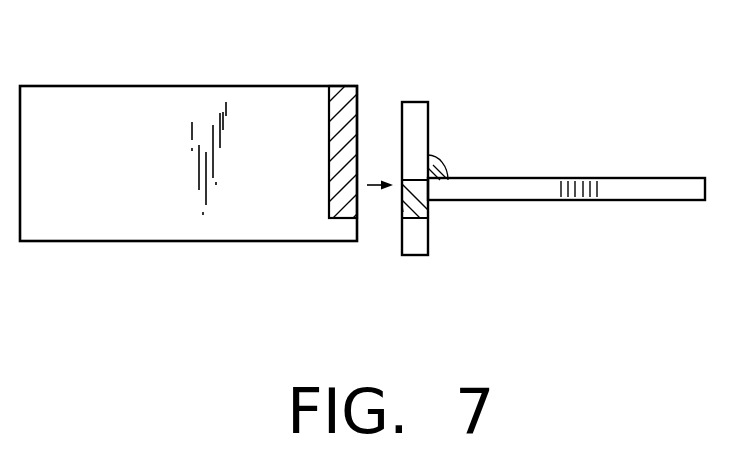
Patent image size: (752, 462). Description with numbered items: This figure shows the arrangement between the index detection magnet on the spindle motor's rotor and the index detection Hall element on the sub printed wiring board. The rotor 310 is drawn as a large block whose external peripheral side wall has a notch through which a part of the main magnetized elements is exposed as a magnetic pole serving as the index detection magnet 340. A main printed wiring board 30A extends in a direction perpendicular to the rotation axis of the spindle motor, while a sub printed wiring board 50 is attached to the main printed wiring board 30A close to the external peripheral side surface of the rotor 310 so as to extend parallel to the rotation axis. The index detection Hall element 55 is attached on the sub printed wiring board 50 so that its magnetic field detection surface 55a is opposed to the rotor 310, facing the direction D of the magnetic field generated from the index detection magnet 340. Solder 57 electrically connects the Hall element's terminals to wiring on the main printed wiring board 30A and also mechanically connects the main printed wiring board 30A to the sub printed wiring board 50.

The rotor 310 is at (197, 86).
The index detection magnet 340 is at (344, 86).
The direction of magnetic field D is at (370, 183).
The sub printed wiring board 50 is at (412, 102).
The index detection Hall element 55 is at (430, 213).
The magnetic field detection surface 55a is at (403, 206).
The solder 57 is at (445, 161).
The main printed wiring board 30A is at (673, 201).